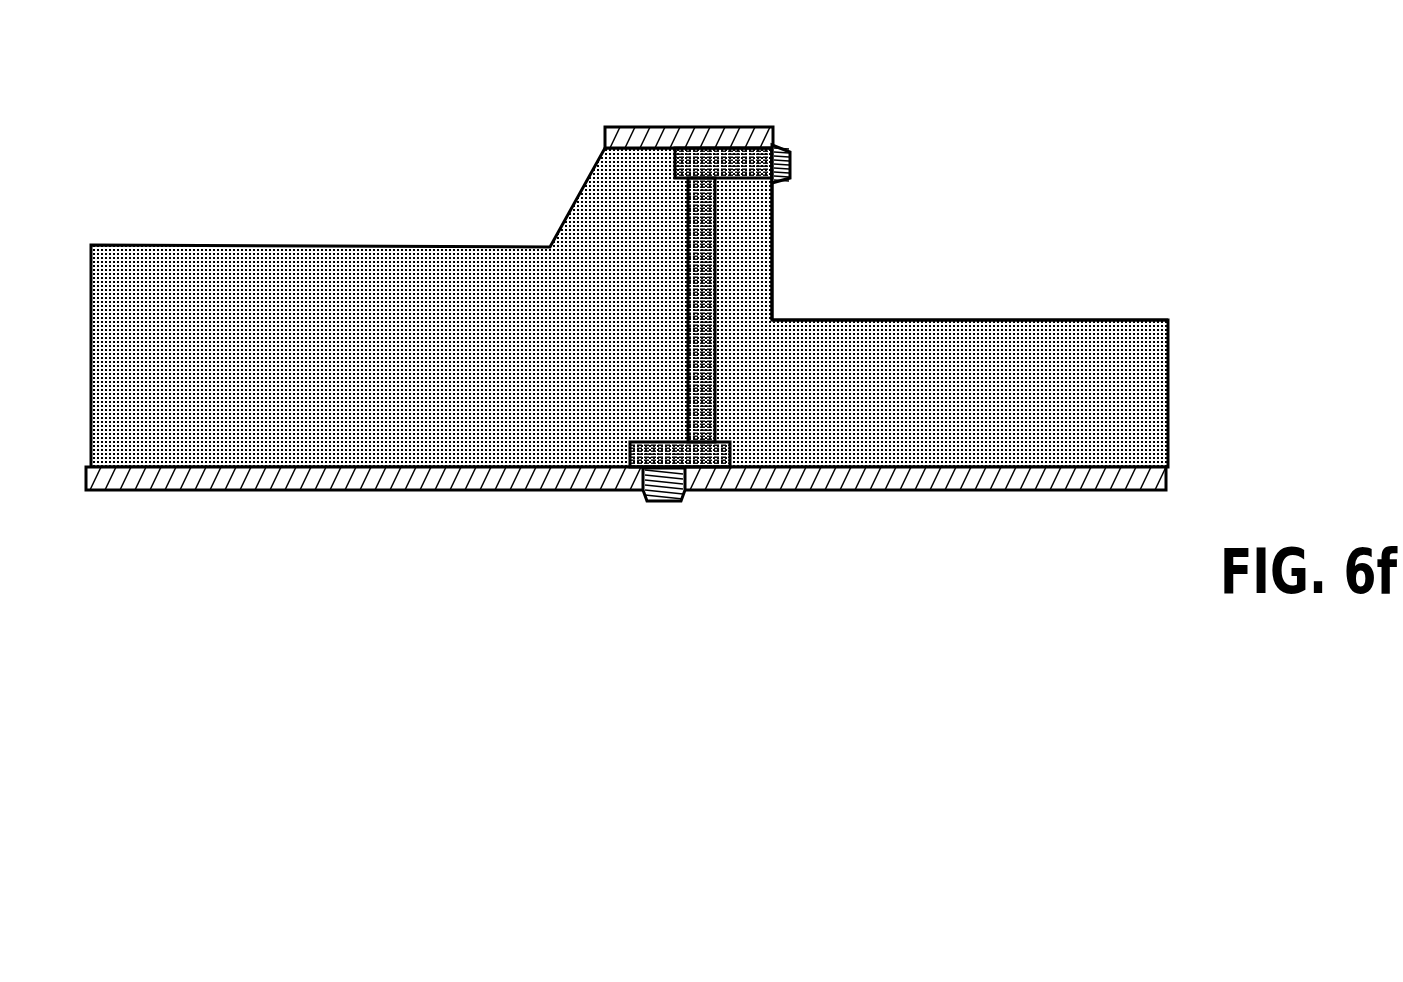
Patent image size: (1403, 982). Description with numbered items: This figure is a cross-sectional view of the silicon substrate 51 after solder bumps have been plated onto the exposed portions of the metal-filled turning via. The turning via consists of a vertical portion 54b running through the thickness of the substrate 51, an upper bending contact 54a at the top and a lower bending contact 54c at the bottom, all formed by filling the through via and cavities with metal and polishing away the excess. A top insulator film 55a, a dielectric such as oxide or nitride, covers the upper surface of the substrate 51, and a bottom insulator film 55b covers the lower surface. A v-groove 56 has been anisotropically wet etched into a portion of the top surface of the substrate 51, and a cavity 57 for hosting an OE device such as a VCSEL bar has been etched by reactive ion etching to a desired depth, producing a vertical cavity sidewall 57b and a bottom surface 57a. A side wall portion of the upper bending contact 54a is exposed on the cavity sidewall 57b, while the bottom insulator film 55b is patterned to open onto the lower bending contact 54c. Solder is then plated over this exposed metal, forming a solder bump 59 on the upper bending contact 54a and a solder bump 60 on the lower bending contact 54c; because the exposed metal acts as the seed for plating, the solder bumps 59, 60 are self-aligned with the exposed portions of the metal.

The substrate 51 is at (152, 312).
The v-groove 56 is at (310, 220).
The cavity 57 is at (968, 285).
The bottom surface 57a is at (1060, 320).
The cavity sidewall 57b is at (772, 237).
The top insulator film 55a is at (648, 128).
The bottom insulator film 55b is at (318, 490).
The upper bending contact 54a is at (675, 162).
The vertical portion 54b is at (688, 318).
The lower bending contact 54c is at (710, 462).
The solder bump 59 is at (668, 502).
The solder bump 60 is at (803, 140).